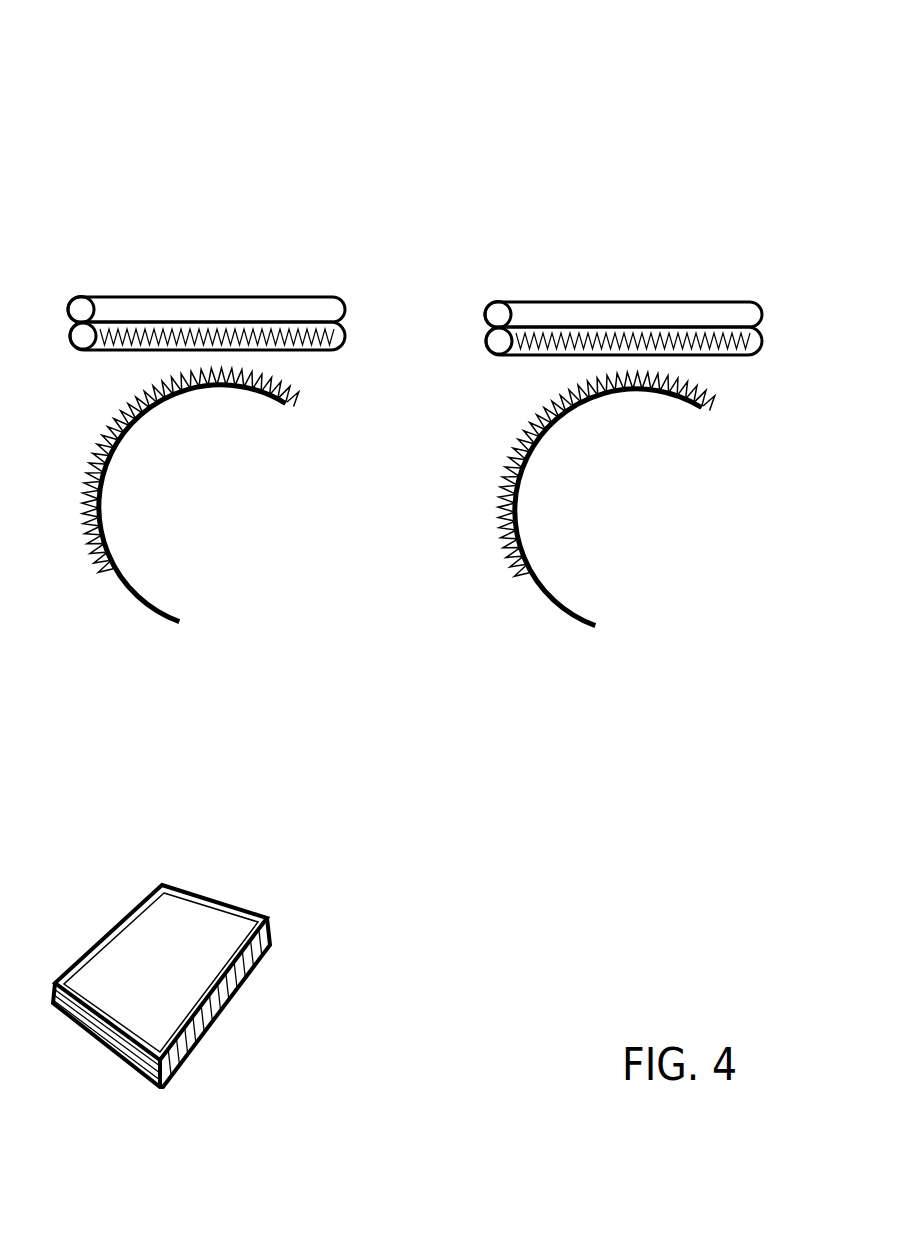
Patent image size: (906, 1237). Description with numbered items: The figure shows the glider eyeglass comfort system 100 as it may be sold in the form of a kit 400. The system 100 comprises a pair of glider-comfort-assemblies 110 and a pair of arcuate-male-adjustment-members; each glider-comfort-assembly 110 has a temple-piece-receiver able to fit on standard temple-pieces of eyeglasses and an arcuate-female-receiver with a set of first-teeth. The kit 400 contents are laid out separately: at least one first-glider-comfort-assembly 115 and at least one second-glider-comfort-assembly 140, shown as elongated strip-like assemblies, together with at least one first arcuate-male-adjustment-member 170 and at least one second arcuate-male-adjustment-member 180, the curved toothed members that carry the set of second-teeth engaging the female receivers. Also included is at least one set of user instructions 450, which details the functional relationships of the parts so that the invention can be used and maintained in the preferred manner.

The glider eyeglass comfort system 100 is at (627, 63).
The glider-comfort-assembly 110 is at (640, 112).
The kit 400 is at (657, 165).
The first-glider-comfort-assembly 115 is at (150, 297).
The second-glider-comfort-assembly 140 is at (587, 298).
The first arcuate-male-adjustment-member 170 is at (101, 502).
The second arcuate-male-adjustment-member 180 is at (517, 500).
The user instructions 450 is at (262, 906).